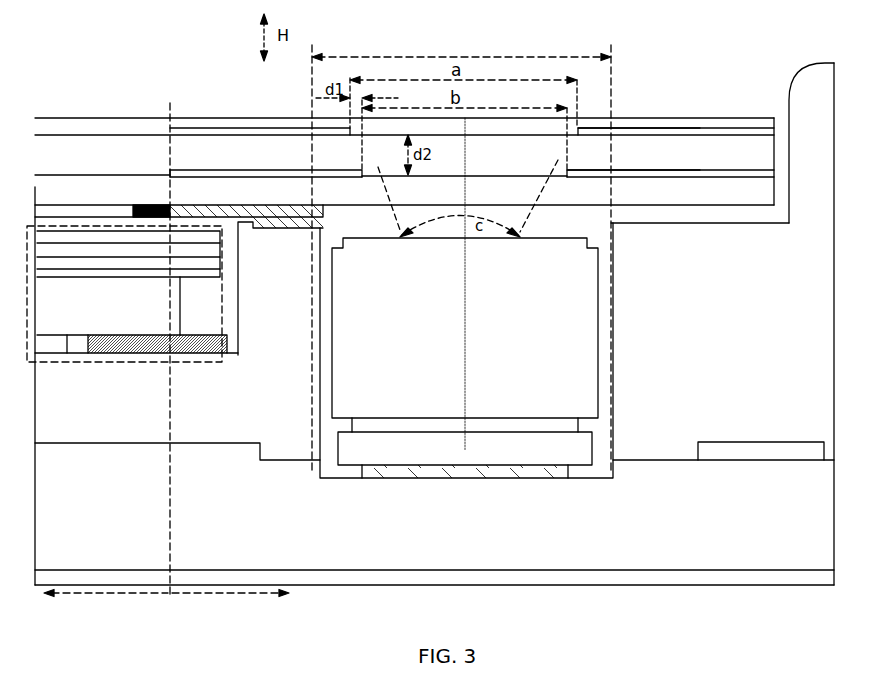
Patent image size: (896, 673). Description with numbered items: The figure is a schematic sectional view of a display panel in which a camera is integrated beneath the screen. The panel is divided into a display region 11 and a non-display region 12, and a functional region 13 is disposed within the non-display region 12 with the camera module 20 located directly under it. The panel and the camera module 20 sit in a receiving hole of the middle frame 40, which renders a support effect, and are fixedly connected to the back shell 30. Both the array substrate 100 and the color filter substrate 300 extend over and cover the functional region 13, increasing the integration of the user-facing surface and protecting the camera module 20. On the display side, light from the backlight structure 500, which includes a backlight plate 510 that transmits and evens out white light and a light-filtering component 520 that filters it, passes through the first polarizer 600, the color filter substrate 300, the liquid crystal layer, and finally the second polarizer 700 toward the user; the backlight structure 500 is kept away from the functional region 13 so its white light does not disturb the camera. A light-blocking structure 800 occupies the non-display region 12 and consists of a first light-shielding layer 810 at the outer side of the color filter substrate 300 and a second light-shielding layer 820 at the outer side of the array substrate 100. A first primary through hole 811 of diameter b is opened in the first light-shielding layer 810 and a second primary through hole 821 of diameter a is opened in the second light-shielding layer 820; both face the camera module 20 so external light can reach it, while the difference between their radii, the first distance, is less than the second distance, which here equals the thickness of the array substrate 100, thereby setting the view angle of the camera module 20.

The display region 11 is at (106, 608).
The non-display region 12 is at (230, 608).
The functional region 13 is at (461, 48).
The camera module 20 is at (530, 390).
The back shell 30 is at (624, 500).
The middle frame 40 is at (280, 440).
The array substrate 100 is at (267, 155).
The color filter substrate 300 is at (189, 193).
The backlight structure 500 is at (128, 166).
The backlight plate 510 is at (105, 307).
The light-filtering component 520 is at (70, 253).
The first polarizer 600 is at (48, 205).
The second polarizer 700 is at (760, 125).
The light-blocking structure 800 is at (127, 84).
The first light-shielding layer 810 is at (176, 168).
The first primary through hole 811 is at (510, 168).
The second light-shielding layer 820 is at (186, 128).
The second primary through hole 821 is at (523, 128).